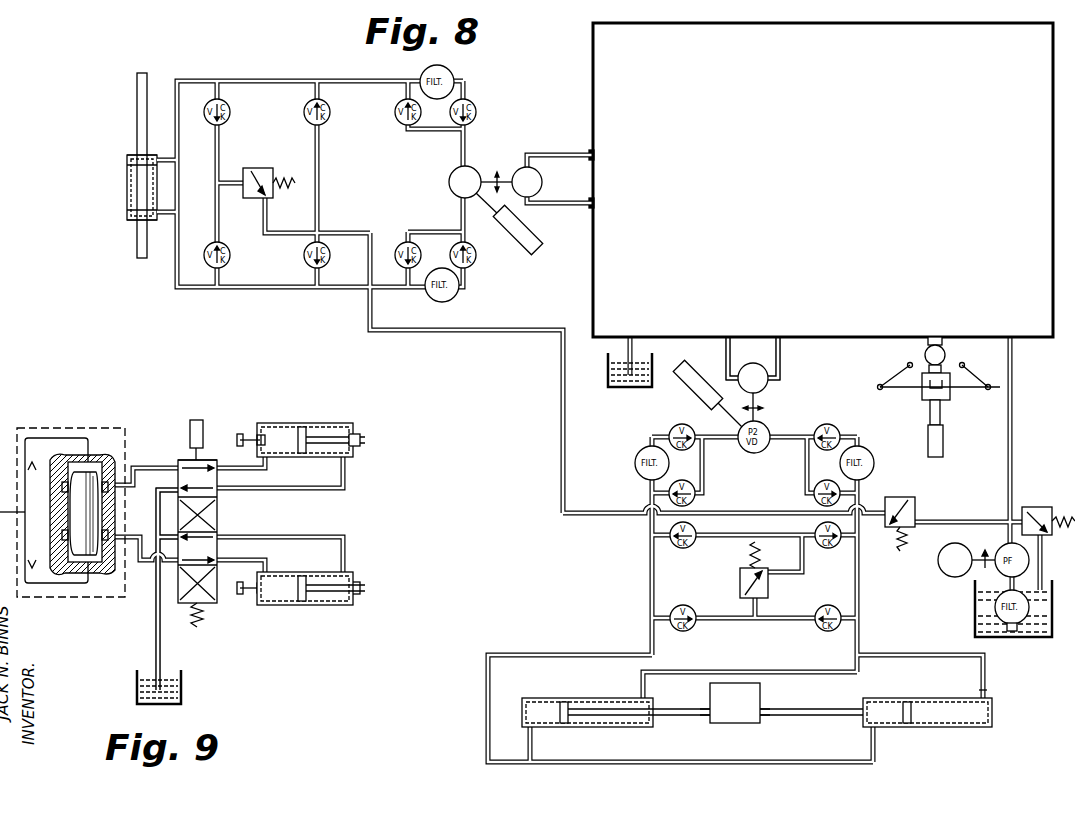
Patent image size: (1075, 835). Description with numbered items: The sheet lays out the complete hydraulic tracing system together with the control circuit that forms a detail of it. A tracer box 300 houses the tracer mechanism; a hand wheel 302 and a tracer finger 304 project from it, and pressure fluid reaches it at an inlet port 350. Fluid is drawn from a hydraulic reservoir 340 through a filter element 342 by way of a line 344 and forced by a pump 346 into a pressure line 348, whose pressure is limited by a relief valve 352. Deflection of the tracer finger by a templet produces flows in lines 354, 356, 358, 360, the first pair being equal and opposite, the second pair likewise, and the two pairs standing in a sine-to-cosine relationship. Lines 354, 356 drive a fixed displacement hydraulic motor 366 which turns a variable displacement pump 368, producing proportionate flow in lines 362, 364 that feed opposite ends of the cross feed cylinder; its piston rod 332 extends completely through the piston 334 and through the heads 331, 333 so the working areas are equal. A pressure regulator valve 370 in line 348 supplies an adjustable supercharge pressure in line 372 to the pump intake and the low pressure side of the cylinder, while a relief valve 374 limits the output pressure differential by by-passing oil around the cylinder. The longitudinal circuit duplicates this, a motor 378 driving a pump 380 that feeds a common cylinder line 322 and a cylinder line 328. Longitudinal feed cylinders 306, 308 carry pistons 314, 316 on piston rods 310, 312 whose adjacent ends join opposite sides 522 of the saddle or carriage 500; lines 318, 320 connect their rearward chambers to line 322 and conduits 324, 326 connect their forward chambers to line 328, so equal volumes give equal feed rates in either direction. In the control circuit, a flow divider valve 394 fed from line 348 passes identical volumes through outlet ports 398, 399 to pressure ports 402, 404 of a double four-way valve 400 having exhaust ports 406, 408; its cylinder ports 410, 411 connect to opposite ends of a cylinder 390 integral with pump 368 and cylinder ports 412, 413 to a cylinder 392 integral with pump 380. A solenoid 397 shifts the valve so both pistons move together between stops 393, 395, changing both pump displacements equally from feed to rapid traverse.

In FIG. 8, the tracer box 300 is at (775, 23).
In FIG. 8, the hand wheel 302 is at (880, 388).
In FIG. 8, the tracer finger 304 is at (943, 440).
In FIG. 8, the longitudinal feed cylinder 306 is at (930, 727).
In FIG. 8, the longitudinal feed cylinder 308 is at (545, 698).
In FIG. 8, the piston rod 310 is at (806, 709).
In FIG. 8, the piston rod 312 is at (670, 709).
In FIG. 8, the piston 314 is at (908, 698).
In FIG. 8, the piston 316 is at (566, 727).
In FIG. 8, the line 318 is at (983, 680).
In FIG. 8, the line 320 is at (795, 672).
In FIG. 8, the common cylinder line 322 is at (857, 633).
In FIG. 8, the conduit 324 is at (828, 762).
In FIG. 8, the conduit 326 is at (530, 745).
In FIG. 8, the cylinder line 328 is at (540, 656).
In FIG. 8, the cylinder head 331 is at (137, 158).
In FIG. 8, the piston rod 332 is at (137, 124).
In FIG. 8, the cylinder head 333 is at (137, 225).
In FIG. 8, the piston 334 is at (127, 170).
In FIG. 8, the hydraulic reservoir 340 is at (608, 380).
In FIG. 9, the hydraulic reservoir 340 is at (183, 690).
In FIG. 8, the filter element 342 is at (1012, 637).
In FIG. 8, the line 344 is at (975, 578).
In FIG. 8, the pump 346 is at (985, 556).
In FIG. 8, the pressure line 348 is at (955, 520).
In FIG. 8, the inlet port 350 is at (127, 192).
In FIG. 8, the relief valve 352 is at (1037, 507).
In FIG. 8, the line 354 is at (545, 155).
In FIG. 8, the line 356 is at (533, 206).
In FIG. 8, the line 358 is at (726, 352).
In FIG. 8, the line 360 is at (780, 348).
In FIG. 8, the line 362 is at (177, 95).
In FIG. 8, the line 364 is at (177, 275).
In FIG. 8, the fixed displacement hydraulic motor 366 is at (542, 183).
In FIG. 8, the variable displacement pump 368 is at (449, 182).
In FIG. 8, the pressure regulator valve 370 is at (900, 497).
In FIG. 8, the supercharge line 372 is at (265, 214).
In FIG. 8, the relief valve 374 is at (255, 168).
In FIG. 8, the motor 378 is at (753, 364).
In FIG. 8, the pump 380 is at (750, 447).
In FIG. 8, the cylinder 390 is at (520, 246).
In FIG. 9, the cylinder 390 is at (300, 423).
In FIG. 8, the cylinder 392 is at (690, 393).
In FIG. 9, the cylinder 392 is at (300, 606).
In FIG. 9, the stop 393 is at (250, 438).
In FIG. 9, the flow divider valve 394 is at (60, 428).
In FIG. 9, the stop 395 is at (357, 430).
In FIG. 9, the solenoid 397 is at (190, 420).
In FIG. 9, the outlet port 398 is at (118, 470).
In FIG. 9, the outlet port 399 is at (105, 573).
In FIG. 9, the double four-way valve 400 is at (205, 458).
In FIG. 9, the pressure port 402 is at (178, 468).
In FIG. 9, the pressure port 404 is at (175, 565).
In FIG. 9, the exhaust port 406 is at (178, 488).
In FIG. 9, the exhaust port 408 is at (158, 525).
In FIG. 9, the cylinder port 410 is at (217, 468).
In FIG. 9, the cylinder port 411 is at (217, 488).
In FIG. 9, the cylinder port 412 is at (217, 537).
In FIG. 9, the cylinder port 413 is at (217, 560).
In FIG. 8, the saddle or carriage 500 is at (742, 723).
In FIG. 8, the sides of the saddle 522 is at (700, 716).